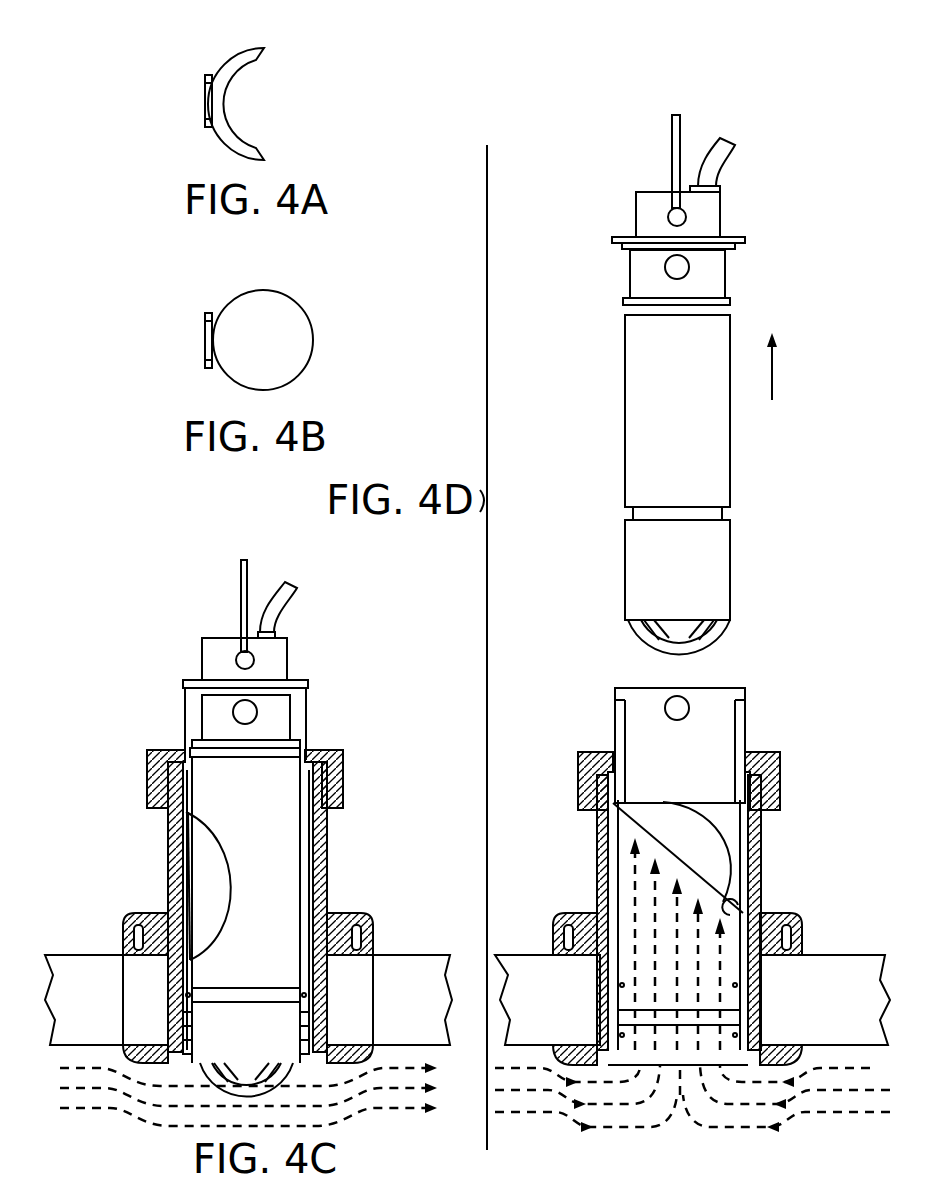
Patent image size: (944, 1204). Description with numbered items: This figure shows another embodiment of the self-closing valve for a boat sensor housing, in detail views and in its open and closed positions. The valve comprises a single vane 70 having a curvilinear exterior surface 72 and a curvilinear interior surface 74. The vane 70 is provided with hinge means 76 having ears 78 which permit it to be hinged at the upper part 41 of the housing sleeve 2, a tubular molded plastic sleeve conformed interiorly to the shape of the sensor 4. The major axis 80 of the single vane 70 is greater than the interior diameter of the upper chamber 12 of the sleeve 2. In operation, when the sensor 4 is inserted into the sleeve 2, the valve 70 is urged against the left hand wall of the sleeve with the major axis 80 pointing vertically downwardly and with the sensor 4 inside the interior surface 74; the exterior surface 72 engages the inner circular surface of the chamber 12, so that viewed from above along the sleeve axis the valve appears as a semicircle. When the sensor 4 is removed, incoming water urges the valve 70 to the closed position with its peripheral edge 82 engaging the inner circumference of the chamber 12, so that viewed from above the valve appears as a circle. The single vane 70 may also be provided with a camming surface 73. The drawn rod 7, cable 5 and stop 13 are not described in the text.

In FIG. 4C, the housing sleeve 2 is at (285, 845).
In FIG. 4C, the sensor 4 is at (290, 660).
In FIG. 4D, the sensor 4 is at (701, 444).
In FIG. 4D, the cable 5 is at (722, 167).
In FIG. 4D, the rod 7 is at (682, 124).
In FIG. 4C, the upper chamber 12 is at (192, 852).
In FIG. 4D, the upper chamber 12 is at (762, 818).
In FIG. 4D, the stop 13 is at (745, 912).
In FIG. 4C, the upper part 41 is at (170, 812).
In FIG. 4A, the single vane 70 is at (262, 85).
In FIG. 4B, the single vane 70 is at (269, 320).
In FIG. 4C, the single vane 70 is at (225, 885).
In FIG. 4D, the single vane 70 is at (680, 829).
In FIG. 4A, the exterior surface 72 is at (244, 53).
In FIG. 4C, the camming surface 73 is at (172, 958).
In FIG. 4A, the interior surface 74 is at (232, 79).
In FIG. 4B, the interior surface 74 is at (246, 353).
In FIG. 4A, the hinge means 76 is at (167, 96).
In FIG. 4B, the hinge means 76 is at (174, 336).
In FIG. 4A, the ears 78 is at (208, 76).
In FIG. 4B, the ears 78 is at (209, 313).
In FIG. 4A, the major axis 80 is at (228, 97).
In FIG. 4C, the major axis 80 is at (190, 912).
In FIG. 4D, the major axis 80 is at (665, 850).
In FIG. 4D, the peripheral edge 82 is at (690, 803).